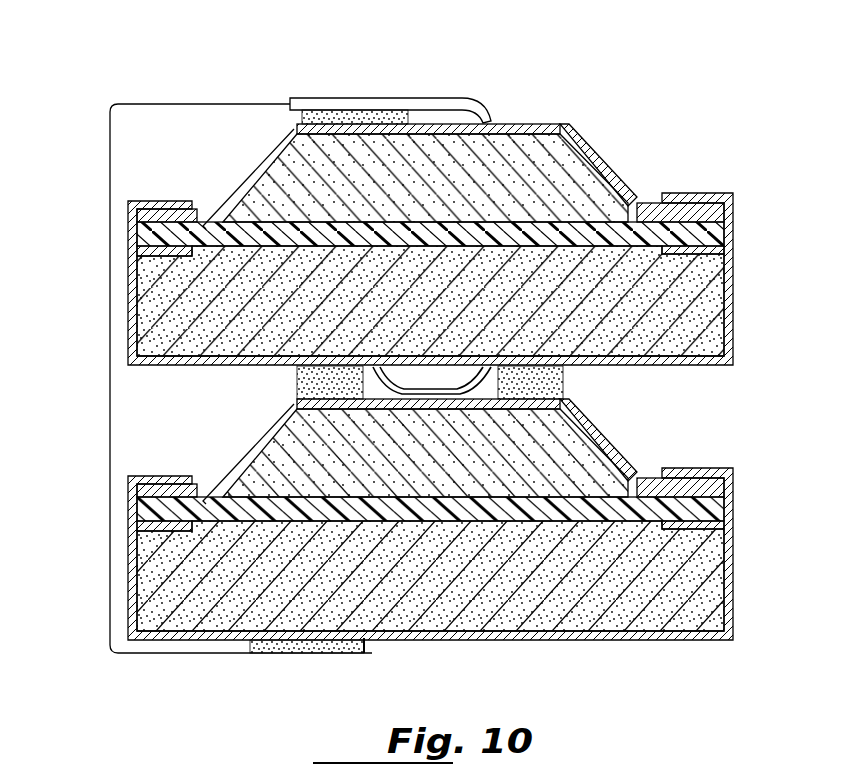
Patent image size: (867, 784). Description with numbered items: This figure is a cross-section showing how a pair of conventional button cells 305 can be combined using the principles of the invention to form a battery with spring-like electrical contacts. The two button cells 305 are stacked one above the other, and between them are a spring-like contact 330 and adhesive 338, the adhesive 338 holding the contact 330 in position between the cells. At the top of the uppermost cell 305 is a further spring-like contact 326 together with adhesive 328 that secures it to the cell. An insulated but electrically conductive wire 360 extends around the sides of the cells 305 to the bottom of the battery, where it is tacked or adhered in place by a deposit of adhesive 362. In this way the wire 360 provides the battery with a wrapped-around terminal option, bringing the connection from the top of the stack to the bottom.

The button cell 305 is at (740, 229).
The spring-like contact 326 is at (440, 99).
The adhesive 328 is at (303, 120).
The spring-like contact 330 is at (405, 384).
The adhesive 338 is at (320, 383).
The insulated electrically conductive wire 360 is at (110, 427).
The deposit of adhesive 362 is at (368, 645).